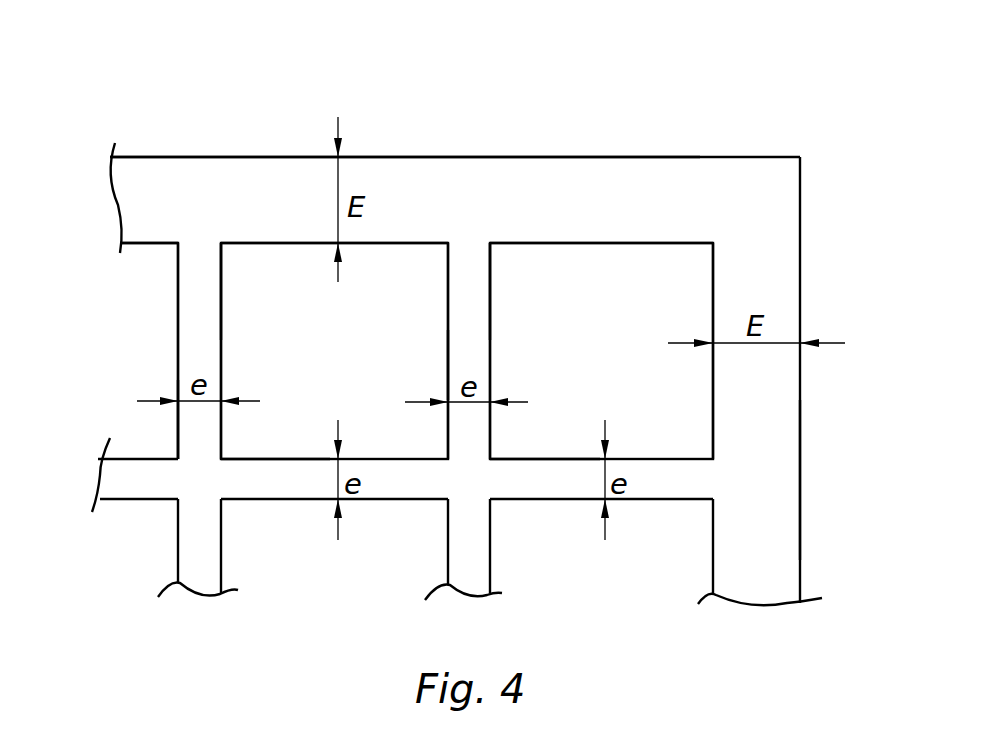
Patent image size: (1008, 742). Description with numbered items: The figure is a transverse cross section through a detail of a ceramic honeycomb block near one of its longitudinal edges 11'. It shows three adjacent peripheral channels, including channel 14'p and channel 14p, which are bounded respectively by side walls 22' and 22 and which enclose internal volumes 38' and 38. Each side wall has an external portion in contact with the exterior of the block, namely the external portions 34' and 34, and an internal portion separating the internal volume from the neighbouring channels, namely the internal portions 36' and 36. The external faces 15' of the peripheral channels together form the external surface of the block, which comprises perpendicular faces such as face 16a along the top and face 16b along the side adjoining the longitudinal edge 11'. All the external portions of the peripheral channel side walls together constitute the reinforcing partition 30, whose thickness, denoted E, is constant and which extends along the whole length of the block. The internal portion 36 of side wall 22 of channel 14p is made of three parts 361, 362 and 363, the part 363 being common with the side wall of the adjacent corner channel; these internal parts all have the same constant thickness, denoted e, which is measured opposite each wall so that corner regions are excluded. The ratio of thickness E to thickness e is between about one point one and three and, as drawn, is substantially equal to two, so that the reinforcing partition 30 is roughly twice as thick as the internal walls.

The reinforcing partition 30 is at (684, 180).
The longitudinal edge 11' is at (836, 345).
The face of external surface 16b is at (802, 483).
The external portion of side wall 22' 34' is at (155, 131).
The face of external surface 16a is at (213, 158).
The external face of channel 15' is at (305, 120).
The external portion of side wall 22 34 is at (420, 135).
The internal volume 38' is at (106, 351).
The internal volume 38 is at (334, 351).
The peripheral channel 14'p is at (121, 302).
The peripheral channel 14p is at (334, 302).
The side wall 22' is at (138, 351).
The side wall 22 is at (420, 351).
The internal portion of side wall 22' 36' is at (150, 419).
The internal portion of side wall 22 36 is at (428, 365).
The part of internal portion 36 361 is at (212, 296).
The part of internal portion 36 362 is at (270, 472).
The part of internal portion common to side walls 22 and 22" 363 is at (480, 297).